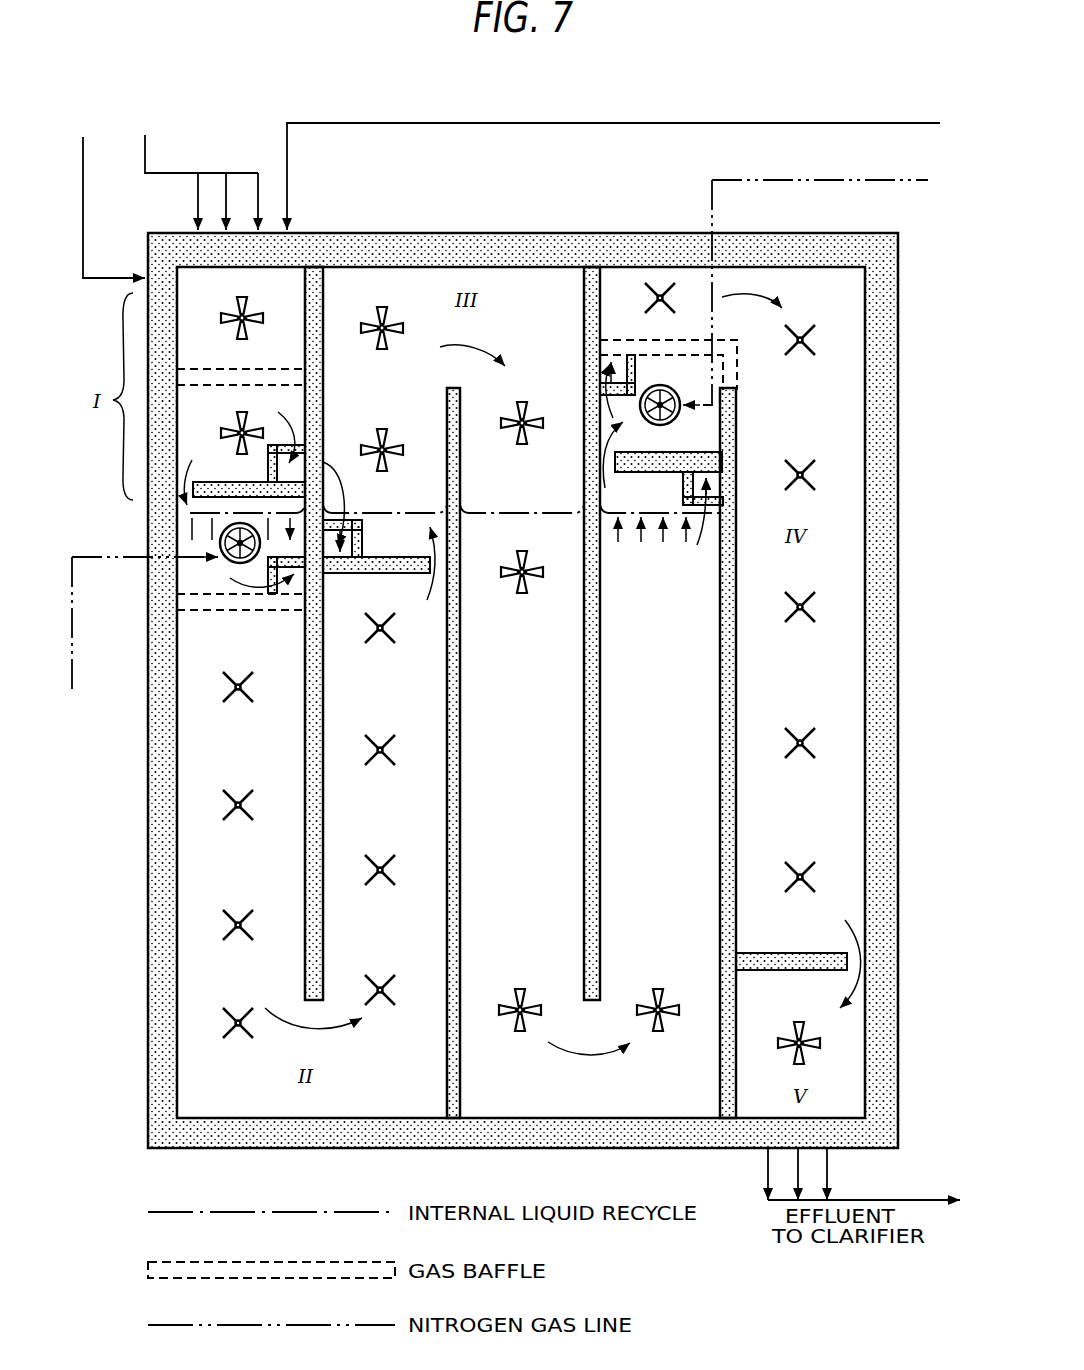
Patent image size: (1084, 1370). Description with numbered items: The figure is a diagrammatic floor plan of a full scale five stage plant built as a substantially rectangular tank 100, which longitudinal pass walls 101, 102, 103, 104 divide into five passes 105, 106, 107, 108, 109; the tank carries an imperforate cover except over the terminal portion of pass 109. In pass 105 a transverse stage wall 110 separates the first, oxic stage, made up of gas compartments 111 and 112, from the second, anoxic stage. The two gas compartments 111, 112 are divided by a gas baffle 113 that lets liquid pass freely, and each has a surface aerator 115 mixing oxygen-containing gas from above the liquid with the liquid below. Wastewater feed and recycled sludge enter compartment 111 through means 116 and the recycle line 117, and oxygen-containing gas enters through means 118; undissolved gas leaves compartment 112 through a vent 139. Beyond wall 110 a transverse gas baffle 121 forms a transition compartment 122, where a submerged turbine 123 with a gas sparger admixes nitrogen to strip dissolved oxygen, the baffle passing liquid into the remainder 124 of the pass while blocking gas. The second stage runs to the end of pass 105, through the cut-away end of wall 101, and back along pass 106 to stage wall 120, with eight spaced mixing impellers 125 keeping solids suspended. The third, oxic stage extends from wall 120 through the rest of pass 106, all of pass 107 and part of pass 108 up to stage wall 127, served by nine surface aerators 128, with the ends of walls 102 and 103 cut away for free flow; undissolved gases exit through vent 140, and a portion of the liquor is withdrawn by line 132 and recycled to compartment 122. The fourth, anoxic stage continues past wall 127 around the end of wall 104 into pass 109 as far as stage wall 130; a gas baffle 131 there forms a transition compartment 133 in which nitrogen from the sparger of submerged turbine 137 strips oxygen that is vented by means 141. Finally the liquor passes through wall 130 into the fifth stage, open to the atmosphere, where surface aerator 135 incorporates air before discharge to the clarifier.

The tank 100 is at (906, 698).
The pass wall 101 is at (323, 692).
The pass wall 102 is at (460, 692).
The pass wall 103 is at (600, 692).
The pass wall 104 is at (738, 692).
The pass 105 is at (255, 880).
The pass 106 is at (395, 930).
The pass 107 is at (535, 867).
The pass 108 is at (680, 862).
The pass 109 is at (797, 932).
The stage wall 110 is at (220, 482).
The gas compartment 111 is at (290, 298).
The gas compartment 112 is at (217, 413).
The gas baffle 113 is at (220, 368).
The surface aerator 115 is at (246, 338).
The feed means 116 is at (178, 172).
The recycle line 117 is at (462, 123).
The oxygen gas introduction means 118 is at (83, 206).
The stage wall 120 is at (390, 574).
The gas baffle 121 is at (255, 605).
The transition compartment 122 is at (217, 588).
The submerged turbine 123 is at (220, 548).
The remainder of pass 124 is at (227, 655).
The mixing impeller 125 is at (240, 700).
The stage wall 127 is at (668, 472).
The surface aerator 128 is at (390, 350).
The stage wall 130 is at (800, 975).
The gas baffle 131 is at (640, 340).
The recycle line 132 is at (490, 512).
The transition compartment 133 is at (658, 447).
The surface aerator 135 is at (805, 1060).
The submerged turbine 137 is at (678, 418).
The vent 139 is at (270, 468).
The vent 140 is at (682, 508).
The vent means 141 is at (640, 362).